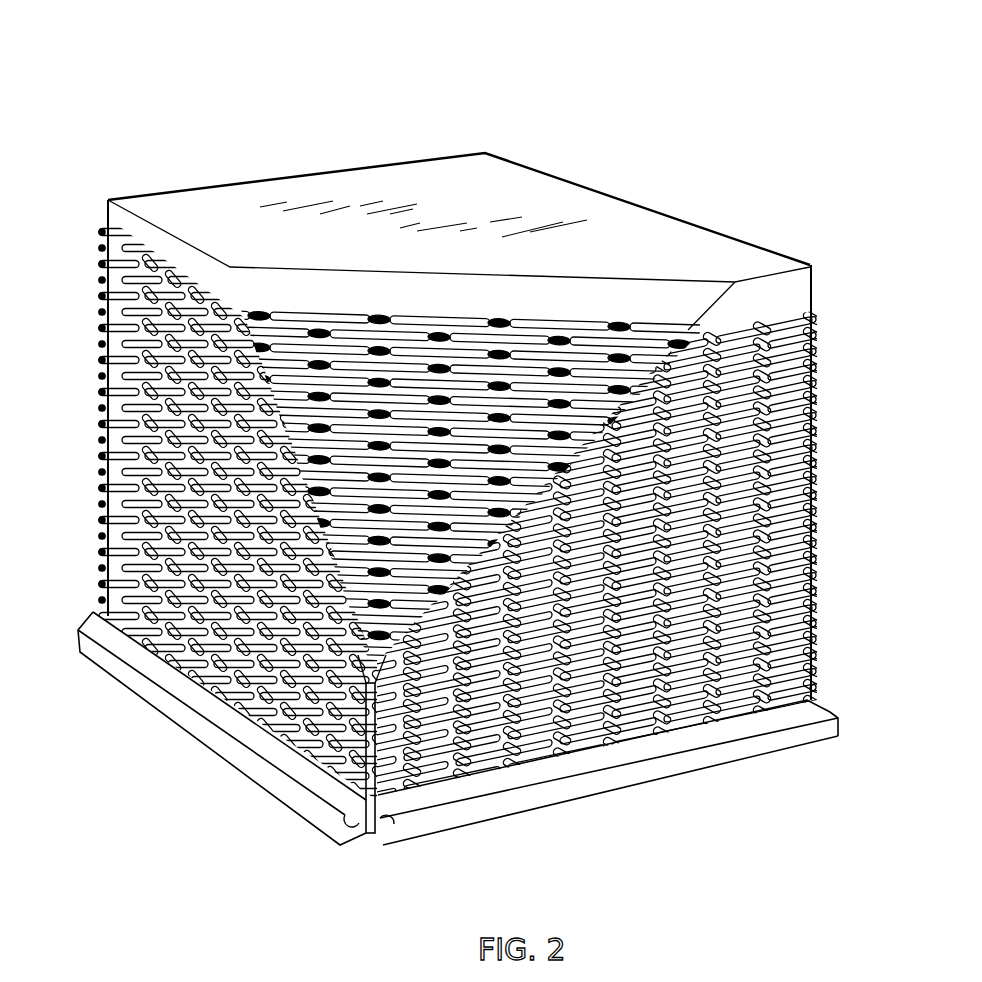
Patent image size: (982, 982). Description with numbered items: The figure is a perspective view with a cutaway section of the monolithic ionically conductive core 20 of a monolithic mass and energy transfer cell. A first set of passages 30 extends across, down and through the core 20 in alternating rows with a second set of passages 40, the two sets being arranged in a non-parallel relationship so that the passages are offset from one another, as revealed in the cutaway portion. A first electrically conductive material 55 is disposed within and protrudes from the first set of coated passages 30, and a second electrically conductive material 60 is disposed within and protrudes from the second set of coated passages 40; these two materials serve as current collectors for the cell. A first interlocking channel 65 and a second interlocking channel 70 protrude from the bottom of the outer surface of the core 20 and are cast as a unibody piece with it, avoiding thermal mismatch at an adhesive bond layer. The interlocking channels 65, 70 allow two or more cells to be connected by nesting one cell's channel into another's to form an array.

The monolithic ionically conductive core 20 is at (459, 173).
The first set of passages 30 is at (488, 470).
The second set of passages 40 is at (355, 452).
The first electrically conductive material 55 is at (848, 482).
The second electrically conductive material 60 is at (68, 408).
The first interlocking channel 65 is at (608, 772).
The second interlocking channel 70 is at (222, 728).